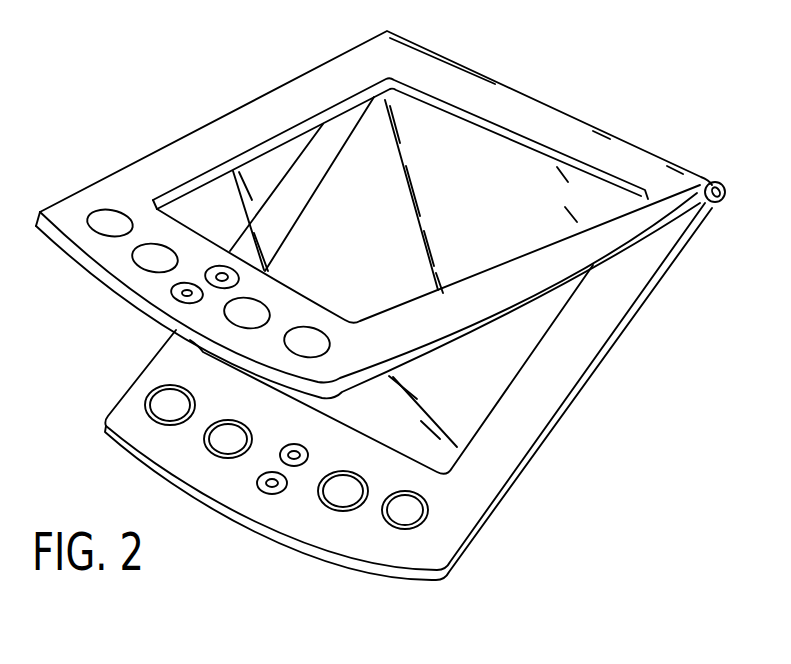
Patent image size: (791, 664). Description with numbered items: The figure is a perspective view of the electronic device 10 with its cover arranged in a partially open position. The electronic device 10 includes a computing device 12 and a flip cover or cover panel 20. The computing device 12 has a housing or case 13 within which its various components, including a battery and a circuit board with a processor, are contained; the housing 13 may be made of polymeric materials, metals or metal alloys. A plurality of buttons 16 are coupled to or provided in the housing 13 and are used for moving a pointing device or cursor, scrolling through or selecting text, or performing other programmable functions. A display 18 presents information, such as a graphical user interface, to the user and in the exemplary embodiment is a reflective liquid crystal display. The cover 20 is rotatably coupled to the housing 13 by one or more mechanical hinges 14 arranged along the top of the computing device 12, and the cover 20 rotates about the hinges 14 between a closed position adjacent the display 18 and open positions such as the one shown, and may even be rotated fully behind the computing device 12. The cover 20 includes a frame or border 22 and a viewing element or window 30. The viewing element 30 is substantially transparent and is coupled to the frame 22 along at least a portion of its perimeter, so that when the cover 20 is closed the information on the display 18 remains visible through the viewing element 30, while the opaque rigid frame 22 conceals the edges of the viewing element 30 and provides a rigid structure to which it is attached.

The electronic device 10 is at (653, 103).
The computing device 12 is at (465, 491).
The housing 13 is at (522, 444).
The hinges 14 is at (719, 202).
The buttons 16 is at (222, 440).
The display 18 is at (503, 357).
The cover 20 is at (273, 116).
The frame 22 is at (147, 180).
The viewing element 30 is at (343, 120).